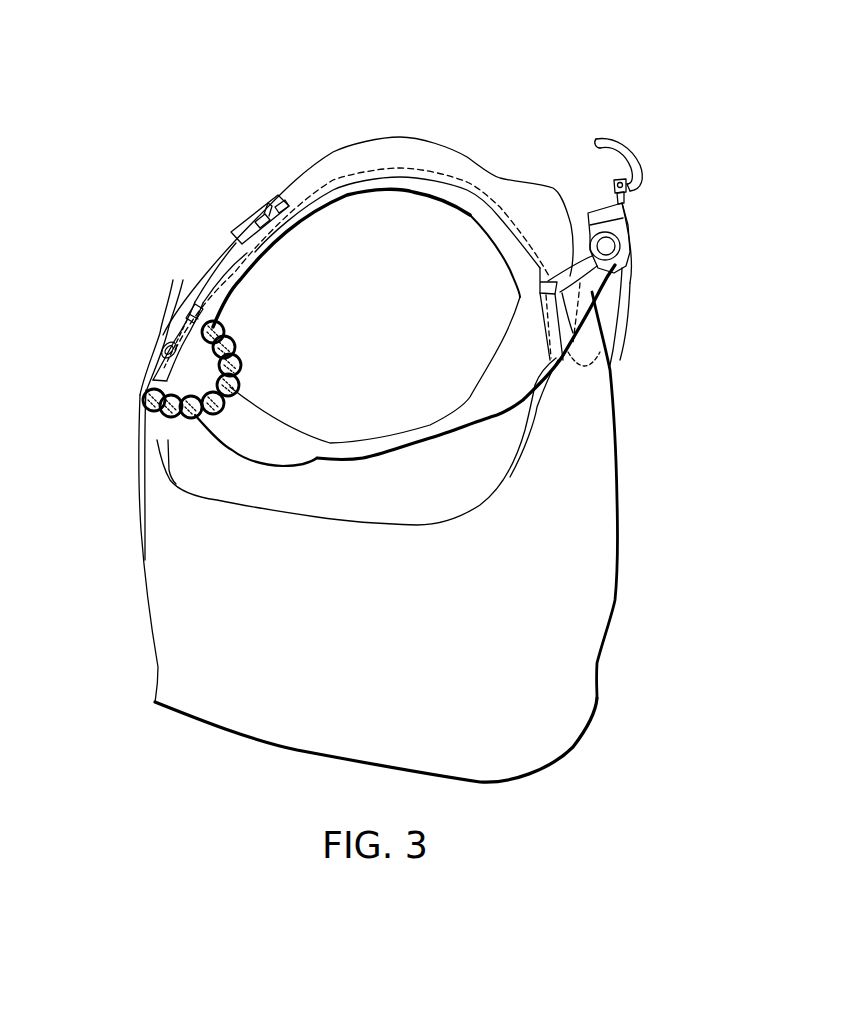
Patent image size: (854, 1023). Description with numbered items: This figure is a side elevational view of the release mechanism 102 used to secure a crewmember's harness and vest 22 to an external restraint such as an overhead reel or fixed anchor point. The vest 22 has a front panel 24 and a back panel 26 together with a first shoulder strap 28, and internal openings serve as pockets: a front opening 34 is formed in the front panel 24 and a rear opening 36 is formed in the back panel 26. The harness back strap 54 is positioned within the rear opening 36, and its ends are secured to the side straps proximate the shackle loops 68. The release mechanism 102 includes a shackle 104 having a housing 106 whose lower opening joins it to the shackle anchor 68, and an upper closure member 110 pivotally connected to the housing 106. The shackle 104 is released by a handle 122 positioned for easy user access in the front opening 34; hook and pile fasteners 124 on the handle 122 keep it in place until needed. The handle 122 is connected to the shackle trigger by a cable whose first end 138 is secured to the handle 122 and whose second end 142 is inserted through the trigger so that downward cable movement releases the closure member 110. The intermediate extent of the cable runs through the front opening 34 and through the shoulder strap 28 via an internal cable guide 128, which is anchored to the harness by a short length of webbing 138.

The vest 22 is at (547, 106).
The front panel 24 is at (178, 570).
The back panel 26 is at (598, 538).
The first shoulder strap 28 is at (362, 153).
The front opening 34 is at (149, 370).
The rear opening 36 is at (590, 348).
The back strap 54 is at (318, 447).
The shackle loop 68 is at (592, 283).
The release mechanism 102 is at (660, 198).
The shackle 104 is at (648, 170).
The housing 106 is at (624, 231).
The upper closure member 110 is at (634, 150).
The handle 122 is at (238, 337).
The hook and pile fasteners 124 is at (163, 347).
The cable guide 128 is at (263, 195).
The first end of cable 138 is at (200, 301).
The second end of cable 142 is at (630, 281).